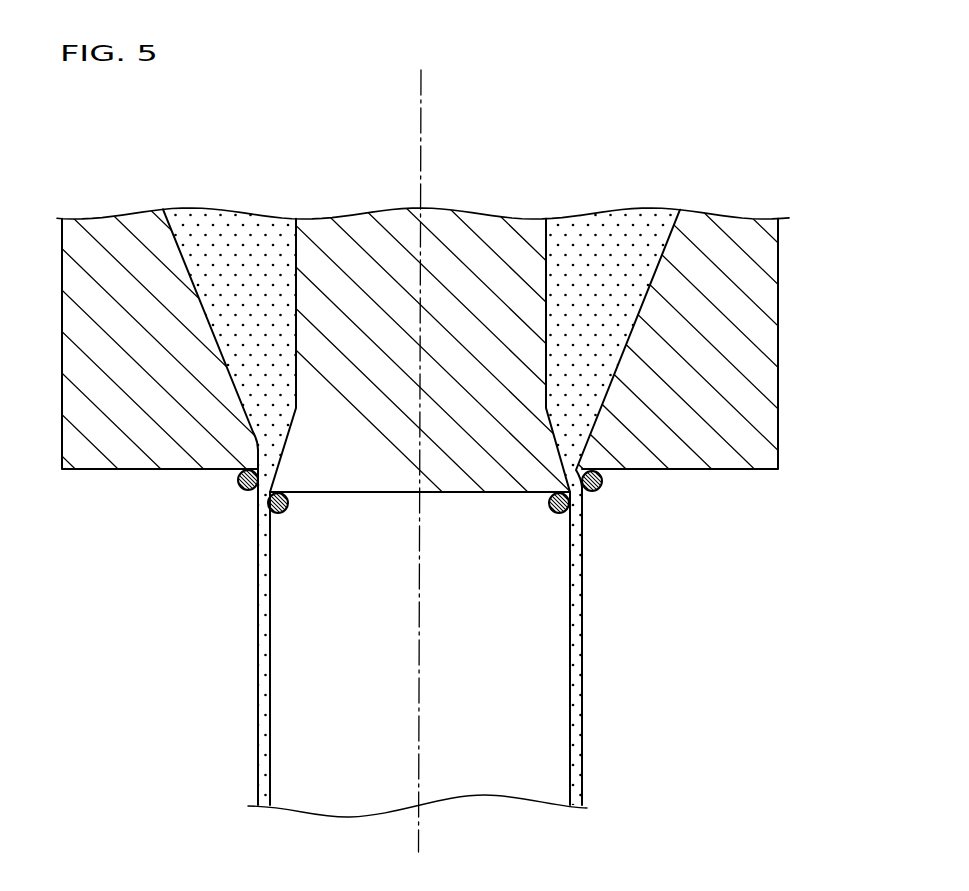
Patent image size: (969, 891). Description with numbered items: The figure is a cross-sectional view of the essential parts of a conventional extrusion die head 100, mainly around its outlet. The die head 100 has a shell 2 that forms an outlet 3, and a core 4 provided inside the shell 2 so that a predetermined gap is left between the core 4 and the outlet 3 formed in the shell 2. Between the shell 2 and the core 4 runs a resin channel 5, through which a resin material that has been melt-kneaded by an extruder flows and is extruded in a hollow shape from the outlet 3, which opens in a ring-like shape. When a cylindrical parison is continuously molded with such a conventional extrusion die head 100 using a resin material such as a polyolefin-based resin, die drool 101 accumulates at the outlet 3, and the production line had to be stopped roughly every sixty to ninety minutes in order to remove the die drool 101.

The extrusion die head 100 is at (796, 254).
The shell 2 is at (740, 403).
The outlet 3 is at (583, 505).
The core 4 is at (493, 237).
The resin channel 5 is at (607, 237).
The die drool 101 is at (250, 488).